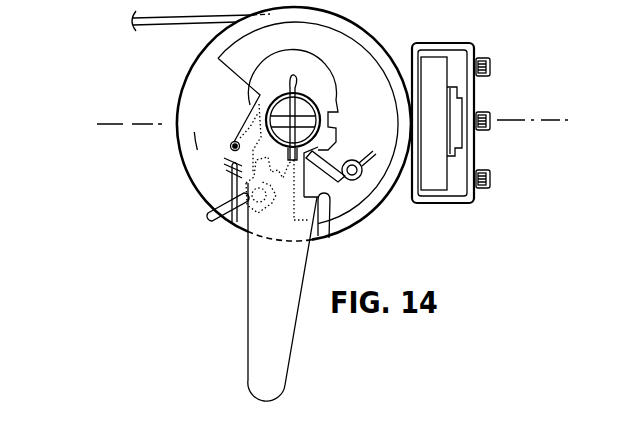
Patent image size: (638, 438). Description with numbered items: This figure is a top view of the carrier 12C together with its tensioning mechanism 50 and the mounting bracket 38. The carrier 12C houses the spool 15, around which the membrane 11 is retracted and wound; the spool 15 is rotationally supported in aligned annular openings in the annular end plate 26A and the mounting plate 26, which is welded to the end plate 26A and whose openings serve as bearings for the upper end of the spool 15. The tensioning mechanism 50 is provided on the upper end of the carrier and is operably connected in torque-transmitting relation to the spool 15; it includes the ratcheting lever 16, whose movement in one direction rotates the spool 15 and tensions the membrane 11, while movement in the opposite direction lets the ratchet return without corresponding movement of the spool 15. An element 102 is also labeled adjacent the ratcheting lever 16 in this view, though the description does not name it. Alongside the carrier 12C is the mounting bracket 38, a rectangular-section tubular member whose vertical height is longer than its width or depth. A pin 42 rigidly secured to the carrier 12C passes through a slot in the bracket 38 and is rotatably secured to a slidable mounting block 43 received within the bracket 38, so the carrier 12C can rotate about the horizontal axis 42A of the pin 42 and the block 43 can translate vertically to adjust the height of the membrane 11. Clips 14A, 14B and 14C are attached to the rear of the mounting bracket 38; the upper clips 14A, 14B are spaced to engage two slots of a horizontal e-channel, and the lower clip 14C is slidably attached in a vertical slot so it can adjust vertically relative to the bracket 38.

The membrane 11 is at (158, 26).
The carrier 12C is at (195, 189).
The clip 14A is at (493, 172).
The clip 14B is at (493, 60).
The lower clip 14C is at (493, 117).
The spool 15 is at (299, 108).
The ratcheting lever 16 is at (260, 315).
The mounting plate 26 is at (241, 71).
The annular end plate 26A is at (200, 140).
The mounting bracket 38 is at (432, 43).
The pin 42 is at (458, 135).
The horizontal axis 42A is at (127, 128).
The mounting block 43 is at (432, 173).
The tensioning mechanism 50 is at (248, 273).
The stop tab 102 is at (325, 225).